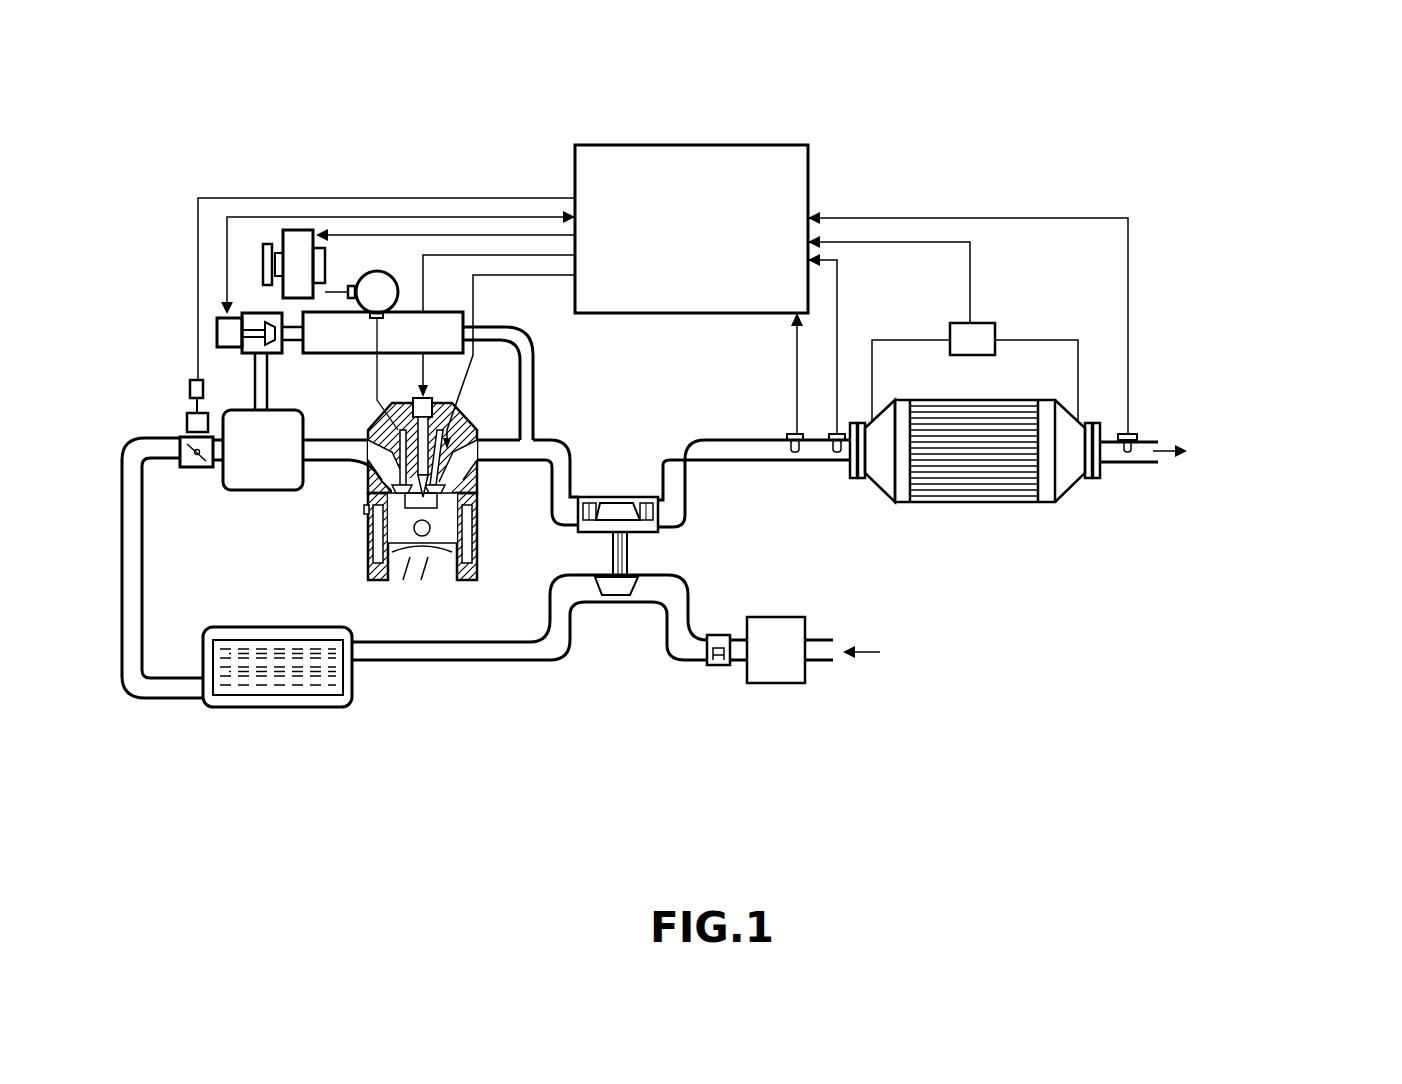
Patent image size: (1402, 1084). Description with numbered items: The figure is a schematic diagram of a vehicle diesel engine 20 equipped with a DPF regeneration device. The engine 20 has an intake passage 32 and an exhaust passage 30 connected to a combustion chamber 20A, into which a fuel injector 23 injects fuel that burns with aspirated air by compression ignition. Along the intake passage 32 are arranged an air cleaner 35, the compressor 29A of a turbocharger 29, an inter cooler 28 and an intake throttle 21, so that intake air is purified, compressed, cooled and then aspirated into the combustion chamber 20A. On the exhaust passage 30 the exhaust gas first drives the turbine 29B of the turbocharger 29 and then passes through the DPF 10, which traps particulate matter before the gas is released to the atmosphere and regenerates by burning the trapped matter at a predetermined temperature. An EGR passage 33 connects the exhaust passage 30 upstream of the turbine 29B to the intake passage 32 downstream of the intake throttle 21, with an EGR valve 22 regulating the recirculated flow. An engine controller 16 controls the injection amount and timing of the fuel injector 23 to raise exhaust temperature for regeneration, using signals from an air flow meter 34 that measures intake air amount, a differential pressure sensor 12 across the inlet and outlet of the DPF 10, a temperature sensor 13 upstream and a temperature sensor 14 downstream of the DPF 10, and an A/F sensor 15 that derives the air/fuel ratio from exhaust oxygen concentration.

The DPF 10 is at (1010, 502).
The differential pressure sensor 12 is at (985, 325).
The temperature sensor 13 is at (830, 452).
The temperature sensor 14 is at (1138, 432).
The air/fuel ratio sensor 15 is at (792, 432).
The engine controller 16 is at (688, 145).
The diesel engine 20 is at (478, 538).
The combustion chamber 20A is at (410, 512).
The intake throttle 21 is at (190, 437).
The EGR valve 22 is at (220, 330).
The fuel injector 23 is at (449, 418).
The inter cooler 28 is at (352, 690).
The turbocharger 29 is at (652, 531).
The compressor 29A is at (620, 594).
The turbine 29B is at (618, 497).
The exhaust passage 30 is at (552, 440).
The intake passage 32 is at (490, 660).
The EGR passage 33 is at (500, 326).
The air flow meter 34 is at (720, 667).
The air cleaner 35 is at (787, 683).